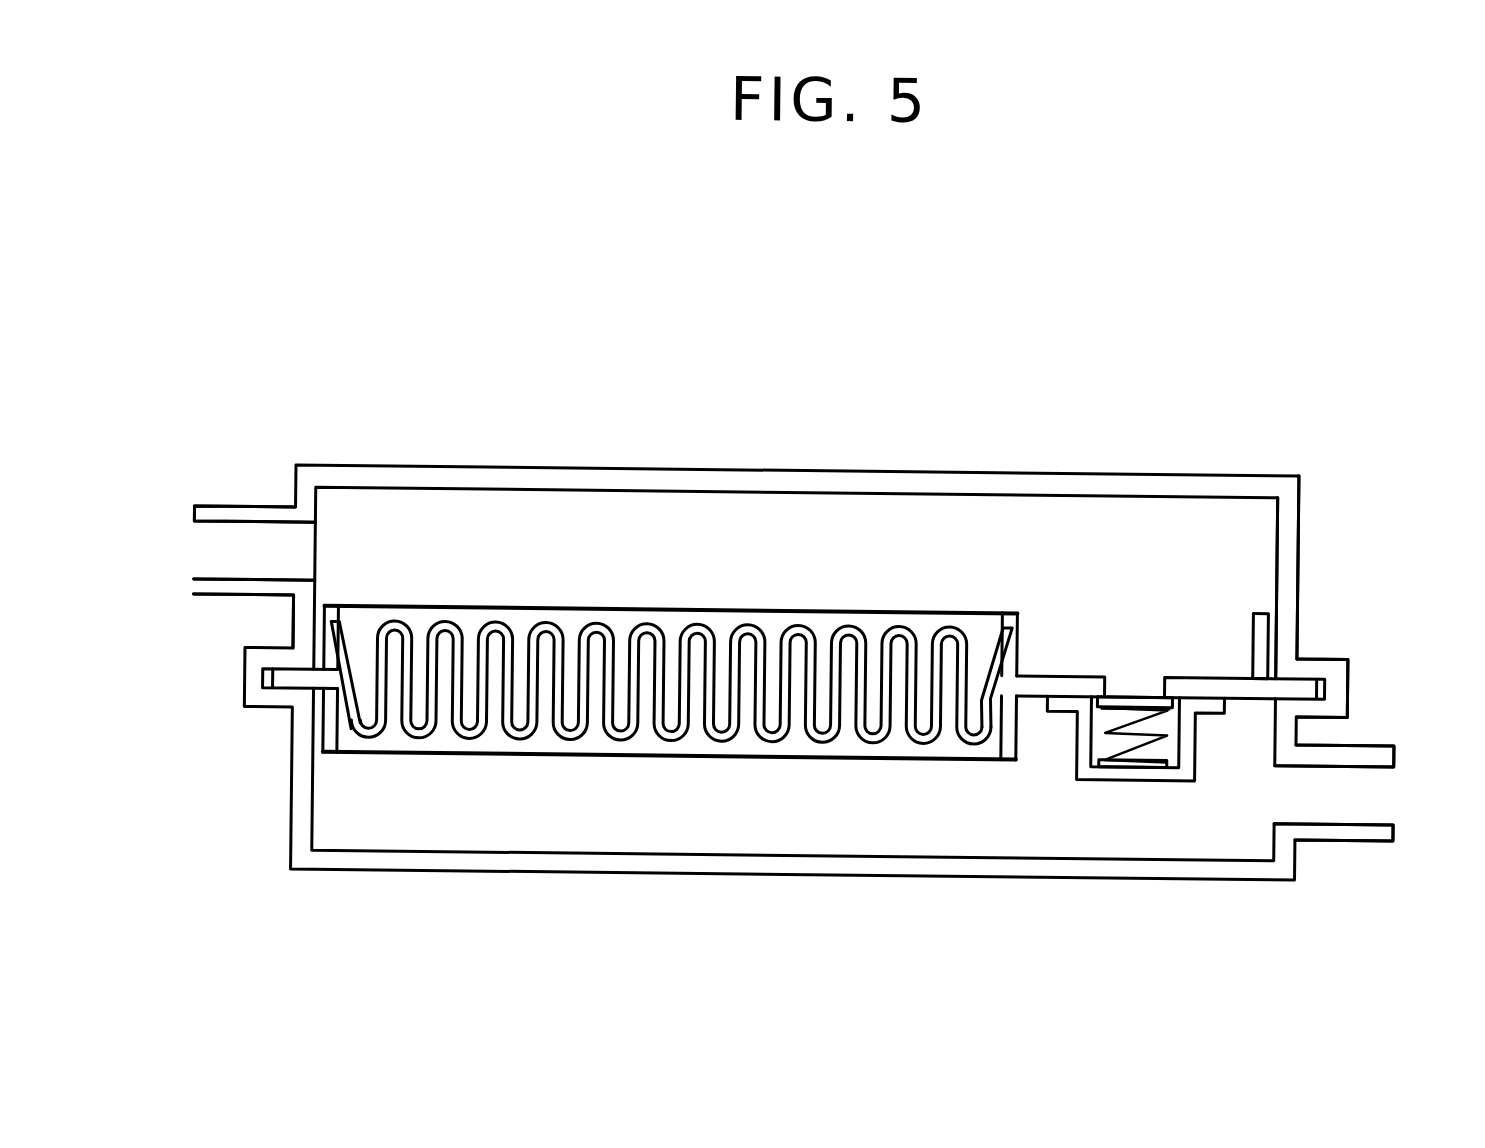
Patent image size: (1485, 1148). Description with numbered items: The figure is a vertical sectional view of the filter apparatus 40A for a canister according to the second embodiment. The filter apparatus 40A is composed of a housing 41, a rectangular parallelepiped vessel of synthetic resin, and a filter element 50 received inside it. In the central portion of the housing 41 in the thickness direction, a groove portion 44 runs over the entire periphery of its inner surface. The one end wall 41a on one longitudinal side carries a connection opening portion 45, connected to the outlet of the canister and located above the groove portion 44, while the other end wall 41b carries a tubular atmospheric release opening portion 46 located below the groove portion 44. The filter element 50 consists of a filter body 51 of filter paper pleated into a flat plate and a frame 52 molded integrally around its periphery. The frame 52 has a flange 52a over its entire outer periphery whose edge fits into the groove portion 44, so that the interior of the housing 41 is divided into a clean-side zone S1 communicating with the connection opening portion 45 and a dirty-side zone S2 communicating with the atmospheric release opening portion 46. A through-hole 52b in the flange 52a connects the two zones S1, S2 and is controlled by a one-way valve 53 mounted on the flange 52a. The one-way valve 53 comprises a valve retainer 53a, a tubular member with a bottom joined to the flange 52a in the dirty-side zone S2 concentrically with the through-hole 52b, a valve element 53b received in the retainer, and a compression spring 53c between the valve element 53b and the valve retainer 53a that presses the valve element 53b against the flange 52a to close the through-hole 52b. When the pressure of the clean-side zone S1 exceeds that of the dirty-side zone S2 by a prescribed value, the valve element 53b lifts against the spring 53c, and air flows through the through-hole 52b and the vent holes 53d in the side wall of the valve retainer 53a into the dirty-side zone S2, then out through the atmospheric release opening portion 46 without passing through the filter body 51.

The filter apparatus 40A is at (1100, 352).
The housing 41 is at (1127, 485).
The one end wall 41a is at (300, 618).
The other end wall 41b is at (1294, 521).
The groove portion 44 is at (1303, 686).
The connection opening portion 45 is at (237, 510).
The atmospheric release opening portion 46 is at (1365, 733).
The filter element 50 is at (852, 381).
The filter body 51 is at (655, 634).
The frame 52 is at (1019, 640).
The flange 52a is at (1064, 668).
The through-hole 52b is at (1110, 688).
The one-way valve 53 is at (1184, 780).
The valve retainer 53a is at (1106, 768).
The valve element 53b is at (1148, 686).
The compression spring 53c is at (1146, 733).
The vent holes 53d is at (1076, 736).
The clean-side zone S1 is at (550, 555).
The dirty-side zone S2 is at (553, 813).